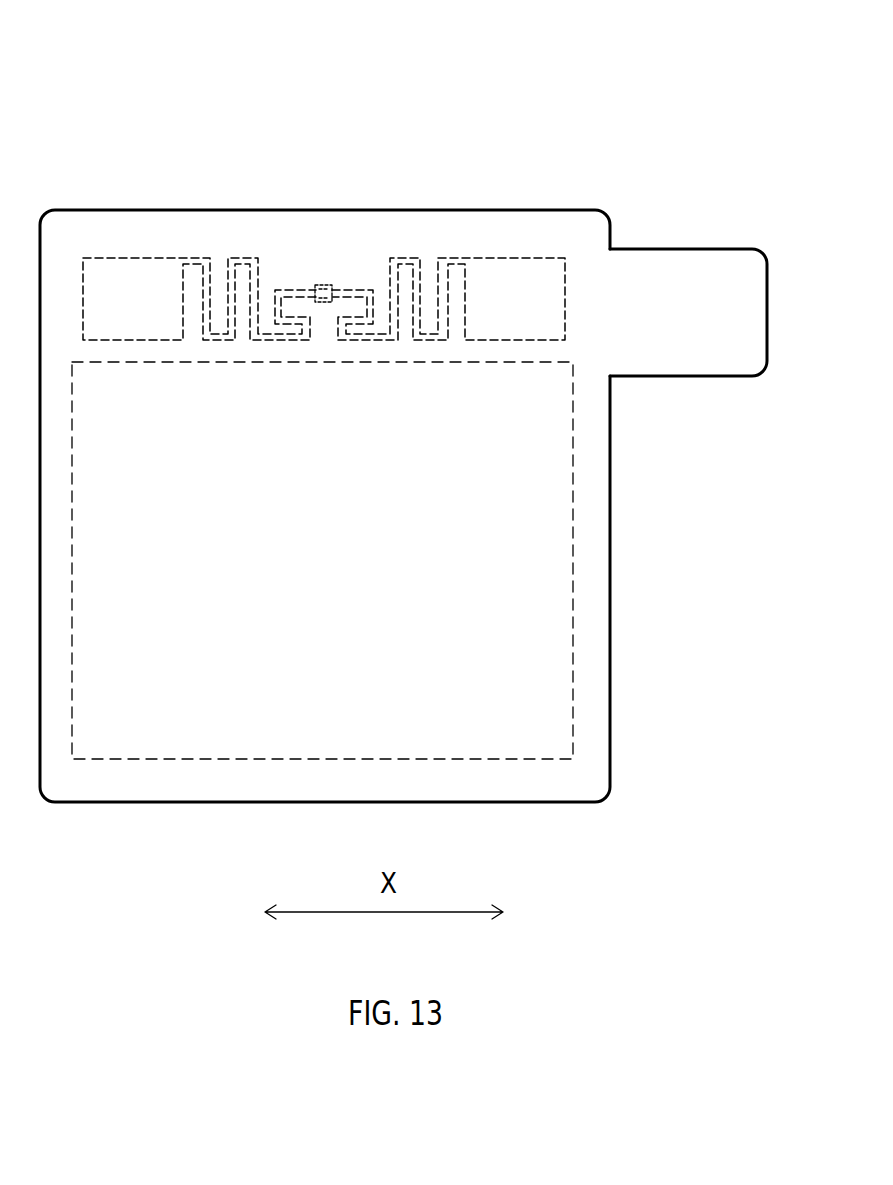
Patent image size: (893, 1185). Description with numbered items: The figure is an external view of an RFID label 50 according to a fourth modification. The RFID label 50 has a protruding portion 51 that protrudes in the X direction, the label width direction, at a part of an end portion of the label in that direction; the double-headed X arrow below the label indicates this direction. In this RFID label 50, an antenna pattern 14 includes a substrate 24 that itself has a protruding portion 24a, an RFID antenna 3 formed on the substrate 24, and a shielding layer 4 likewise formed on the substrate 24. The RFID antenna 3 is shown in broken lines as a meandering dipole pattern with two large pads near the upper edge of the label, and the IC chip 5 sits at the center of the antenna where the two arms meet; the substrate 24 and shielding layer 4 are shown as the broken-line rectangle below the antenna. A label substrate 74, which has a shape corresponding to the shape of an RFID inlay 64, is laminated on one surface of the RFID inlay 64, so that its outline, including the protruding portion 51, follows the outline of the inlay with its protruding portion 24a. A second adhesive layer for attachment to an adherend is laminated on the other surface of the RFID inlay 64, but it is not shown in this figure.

The RFID label 50 is at (283, 117).
The label substrate 74 is at (132, 210).
The protruding portion 51 is at (730, 275).
The protruding portion 24a is at (687, 275).
The RFID inlay 64 is at (637, 70).
The IC chip 5 is at (324, 288).
The antenna pattern 14 is at (678, 123).
The substrate 24 is at (523, 228).
The RFID antenna 3 is at (548, 275).
The shielding layer 4 is at (523, 510).